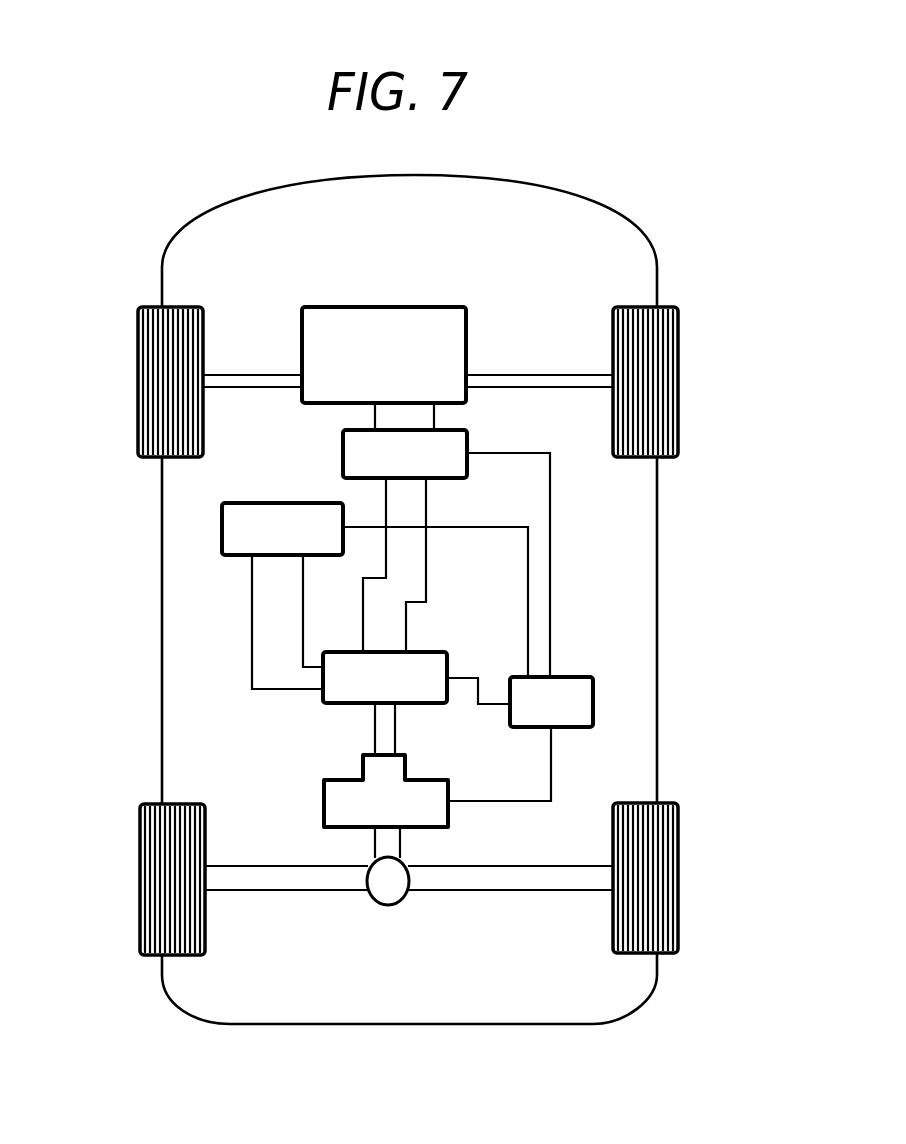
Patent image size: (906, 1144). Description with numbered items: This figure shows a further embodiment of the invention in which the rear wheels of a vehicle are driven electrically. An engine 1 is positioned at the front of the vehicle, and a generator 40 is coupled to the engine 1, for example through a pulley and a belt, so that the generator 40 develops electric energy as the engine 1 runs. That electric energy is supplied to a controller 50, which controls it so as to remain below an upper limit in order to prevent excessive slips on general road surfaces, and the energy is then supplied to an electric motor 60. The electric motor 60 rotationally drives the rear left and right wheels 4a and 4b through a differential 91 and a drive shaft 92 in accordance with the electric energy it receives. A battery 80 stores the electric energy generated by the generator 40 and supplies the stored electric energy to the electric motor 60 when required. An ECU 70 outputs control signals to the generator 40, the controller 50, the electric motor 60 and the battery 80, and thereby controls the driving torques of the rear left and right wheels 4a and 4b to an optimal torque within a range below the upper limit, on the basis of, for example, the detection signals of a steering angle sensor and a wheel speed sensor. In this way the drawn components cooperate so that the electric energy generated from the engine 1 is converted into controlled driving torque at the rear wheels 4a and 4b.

The engine 1 is at (442, 318).
The generator 40 is at (448, 466).
The battery 80 is at (235, 530).
The controller 50 is at (429, 677).
The ECU 70 is at (572, 708).
The electric motor 60 is at (429, 802).
The rear left wheel 4a is at (140, 850).
The rear right wheel 4b is at (678, 850).
The differential 91 is at (390, 895).
The drive shaft 92 is at (302, 878).